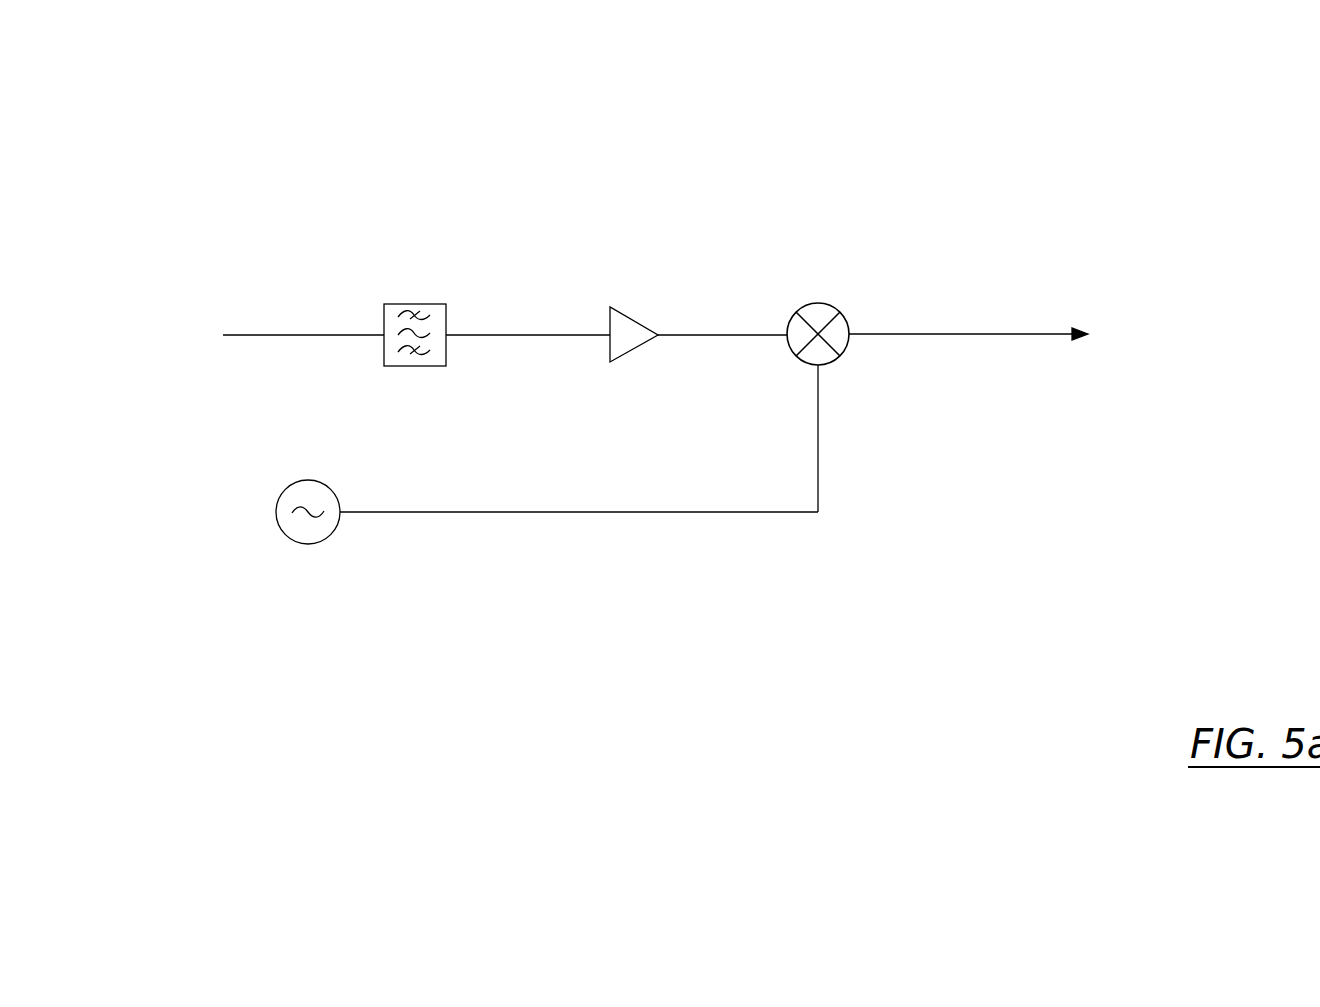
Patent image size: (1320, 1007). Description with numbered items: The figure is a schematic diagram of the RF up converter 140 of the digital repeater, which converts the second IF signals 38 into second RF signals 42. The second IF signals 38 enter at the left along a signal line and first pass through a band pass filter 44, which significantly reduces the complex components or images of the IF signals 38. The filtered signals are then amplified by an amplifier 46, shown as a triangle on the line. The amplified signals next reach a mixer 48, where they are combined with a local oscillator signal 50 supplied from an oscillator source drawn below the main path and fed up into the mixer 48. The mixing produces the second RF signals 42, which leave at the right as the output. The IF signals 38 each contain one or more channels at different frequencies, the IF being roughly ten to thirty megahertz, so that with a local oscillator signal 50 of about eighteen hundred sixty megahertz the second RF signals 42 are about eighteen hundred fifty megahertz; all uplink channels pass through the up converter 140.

The RF up converter 140 is at (1000, 124).
The second IF signals 38 is at (250, 335).
The band pass filter 44 is at (423, 304).
The amplifier 46 is at (631, 318).
The mixer 48 is at (823, 303).
The second RF signals 42 is at (1007, 333).
The local oscillator (LO) signal 50 is at (412, 512).